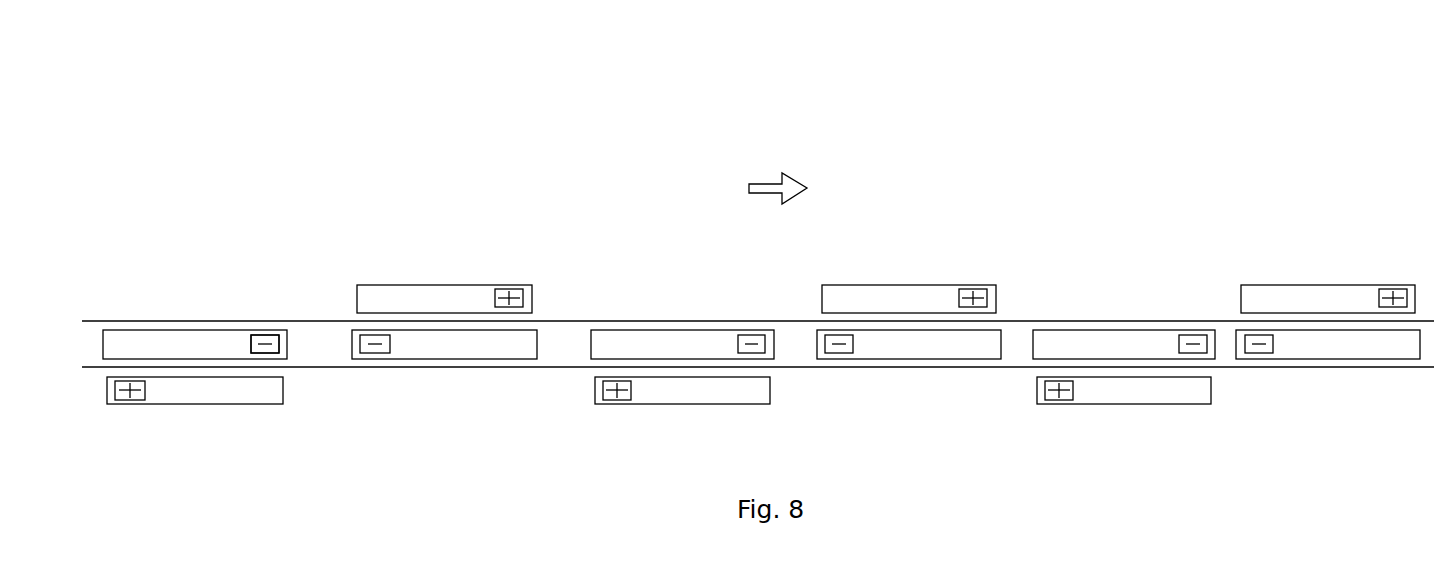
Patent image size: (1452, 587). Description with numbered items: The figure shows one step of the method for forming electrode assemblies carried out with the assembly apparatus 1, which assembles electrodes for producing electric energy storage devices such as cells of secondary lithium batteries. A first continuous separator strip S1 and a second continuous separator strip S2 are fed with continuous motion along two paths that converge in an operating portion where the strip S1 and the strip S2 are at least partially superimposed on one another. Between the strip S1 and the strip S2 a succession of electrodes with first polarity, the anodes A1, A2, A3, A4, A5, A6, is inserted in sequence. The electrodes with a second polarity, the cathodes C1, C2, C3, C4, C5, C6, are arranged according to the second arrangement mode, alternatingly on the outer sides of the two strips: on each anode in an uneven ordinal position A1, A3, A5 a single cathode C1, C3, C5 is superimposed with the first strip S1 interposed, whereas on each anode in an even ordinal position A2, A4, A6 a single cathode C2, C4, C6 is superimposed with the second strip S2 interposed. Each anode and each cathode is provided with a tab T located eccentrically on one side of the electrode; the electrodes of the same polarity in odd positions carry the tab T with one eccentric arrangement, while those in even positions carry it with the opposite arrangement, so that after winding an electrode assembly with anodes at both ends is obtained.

The assembly apparatus 1 is at (207, 114).
The electrode with first polarity A1 is at (1345, 345).
The electrode with first polarity A2 is at (1112, 338).
The electrode with first polarity A3 is at (916, 347).
The electrode with first polarity A4 is at (677, 341).
The electrode with first polarity A5 is at (450, 346).
The electrode with first polarity A6 is at (169, 341).
The electrode with second polarity C1 is at (1317, 292).
The electrode with second polarity C2 is at (1123, 393).
The electrode with second polarity C3 is at (897, 292).
The electrode with second polarity C4 is at (680, 395).
The electrode with second polarity C5 is at (434, 292).
The electrode with second polarity C6 is at (182, 393).
The first continuous separator strip S1 is at (555, 368).
The second continuous separator strip S2 is at (1182, 322).
The tab T is at (271, 337).